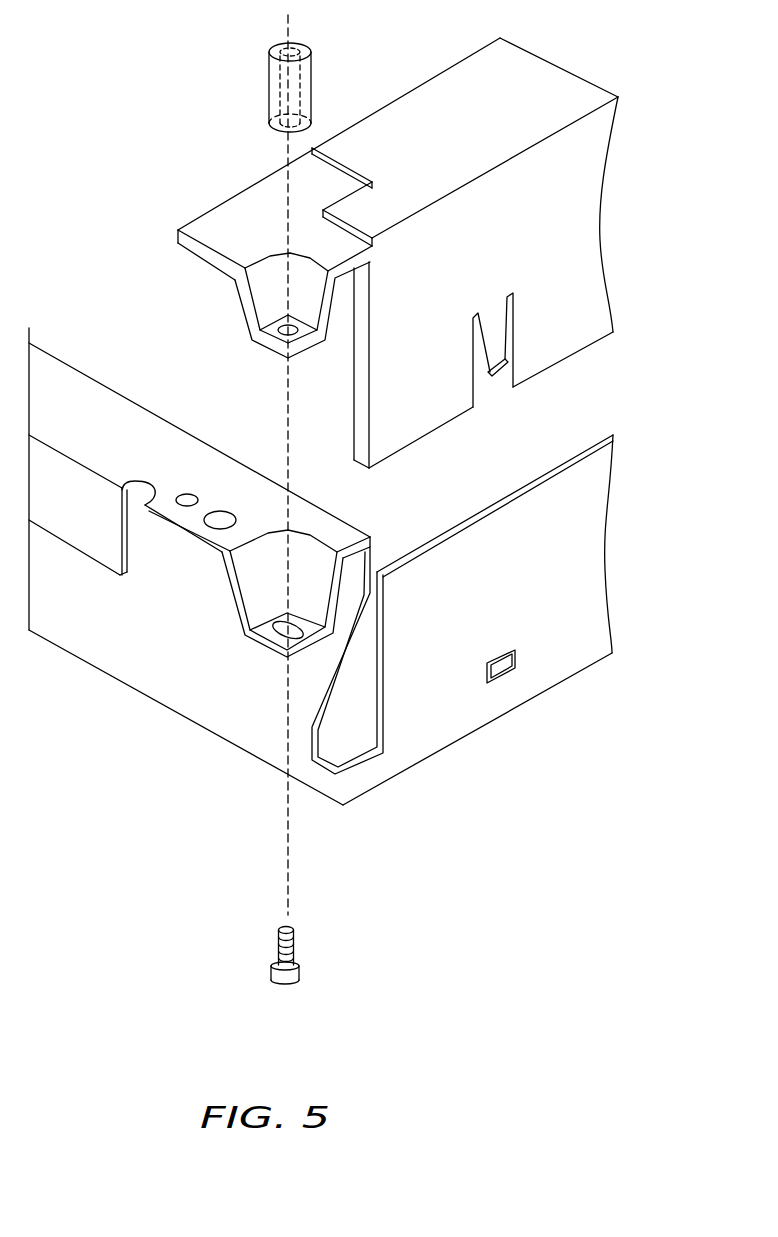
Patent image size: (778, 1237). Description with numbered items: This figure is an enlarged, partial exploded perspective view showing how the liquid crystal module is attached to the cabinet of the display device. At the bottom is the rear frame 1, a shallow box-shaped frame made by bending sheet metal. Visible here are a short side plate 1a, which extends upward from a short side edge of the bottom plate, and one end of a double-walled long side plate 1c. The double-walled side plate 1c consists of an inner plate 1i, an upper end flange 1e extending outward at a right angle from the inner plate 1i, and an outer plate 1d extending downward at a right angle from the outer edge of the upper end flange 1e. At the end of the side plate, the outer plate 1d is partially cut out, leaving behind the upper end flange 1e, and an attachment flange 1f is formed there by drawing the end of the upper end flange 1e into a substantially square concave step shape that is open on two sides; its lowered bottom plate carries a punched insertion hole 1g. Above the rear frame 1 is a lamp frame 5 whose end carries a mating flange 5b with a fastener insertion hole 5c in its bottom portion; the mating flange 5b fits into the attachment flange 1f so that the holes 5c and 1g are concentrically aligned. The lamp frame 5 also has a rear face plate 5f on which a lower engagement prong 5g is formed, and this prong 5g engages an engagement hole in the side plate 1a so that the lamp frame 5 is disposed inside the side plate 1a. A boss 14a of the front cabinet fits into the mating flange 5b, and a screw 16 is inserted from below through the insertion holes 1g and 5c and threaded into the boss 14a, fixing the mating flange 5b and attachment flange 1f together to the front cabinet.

The rear frame 1 is at (328, 566).
The short side plate 1a is at (555, 662).
The double-walled long side plate 1c is at (92, 640).
The outer plate 1d is at (78, 535).
The upper end flange 1e is at (255, 488).
The attachment flange 1f is at (255, 632).
The insertion hole 1g is at (280, 637).
The inner plate 1i is at (225, 710).
The lamp frame 5 is at (398, 249).
The mating flange 5b is at (270, 333).
The fastener insertion hole 5c is at (304, 335).
The rear face plate 5f is at (433, 412).
The lower engagement prong 5g is at (510, 359).
The boss 14a is at (277, 88).
The screw 16 is at (283, 977).